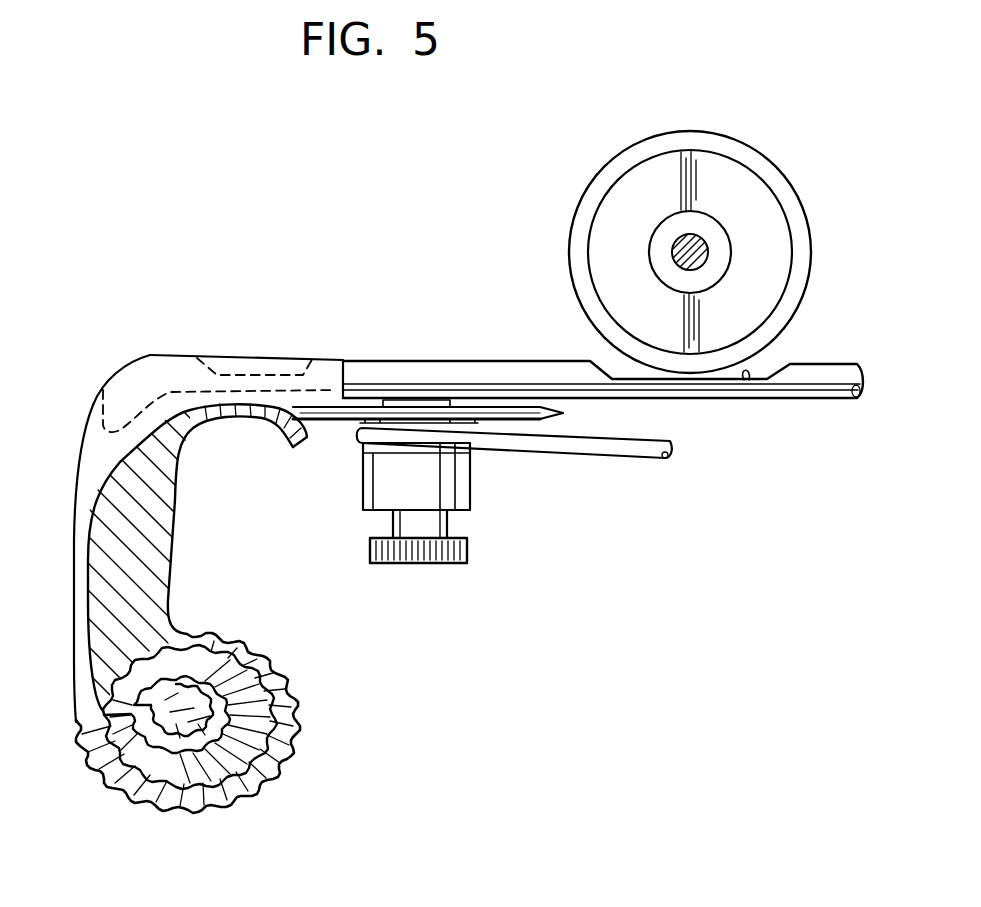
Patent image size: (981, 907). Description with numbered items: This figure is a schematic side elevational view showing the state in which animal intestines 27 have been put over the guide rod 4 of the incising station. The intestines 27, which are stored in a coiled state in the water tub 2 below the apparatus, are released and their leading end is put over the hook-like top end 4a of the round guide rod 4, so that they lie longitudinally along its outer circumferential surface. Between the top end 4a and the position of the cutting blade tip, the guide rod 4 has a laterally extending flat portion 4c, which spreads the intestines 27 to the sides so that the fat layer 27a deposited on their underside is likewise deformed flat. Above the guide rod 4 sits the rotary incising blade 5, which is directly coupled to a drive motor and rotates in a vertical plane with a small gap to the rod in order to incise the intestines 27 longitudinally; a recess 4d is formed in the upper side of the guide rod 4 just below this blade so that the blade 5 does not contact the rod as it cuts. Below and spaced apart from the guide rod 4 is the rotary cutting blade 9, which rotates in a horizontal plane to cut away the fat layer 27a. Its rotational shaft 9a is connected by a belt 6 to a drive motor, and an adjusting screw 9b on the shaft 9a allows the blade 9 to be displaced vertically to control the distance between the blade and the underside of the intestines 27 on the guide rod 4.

The water tub 2 is at (441, 788).
The guide rod 4 is at (478, 372).
The hook-like top end 4a is at (103, 390).
The flat portion 4c is at (260, 375).
The recess 4d is at (748, 380).
The rotary incising blade 5 is at (598, 245).
The belt 6 is at (637, 462).
The rotary cutting blade 9 is at (330, 419).
The rotational shaft 9a is at (458, 486).
The adjusting screw 9b is at (420, 565).
The intestines 27 is at (250, 799).
The fat layer 27a is at (147, 565).